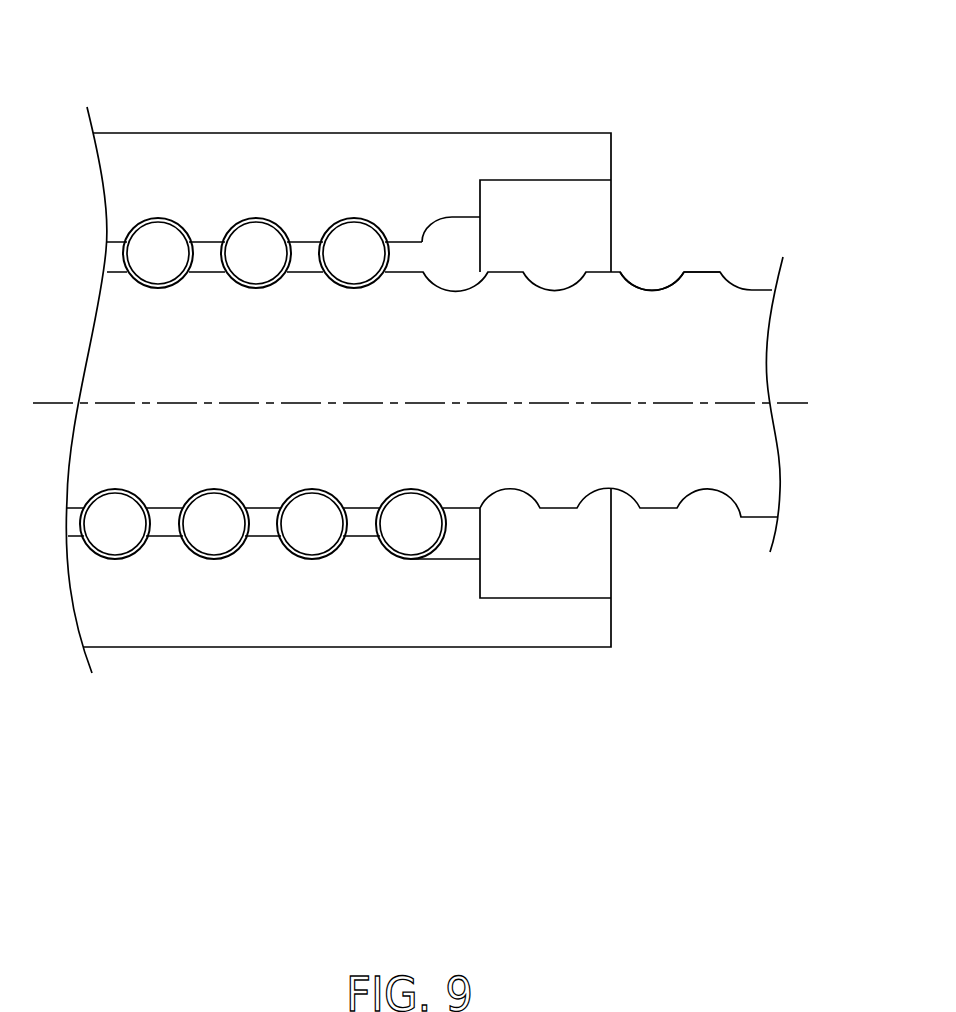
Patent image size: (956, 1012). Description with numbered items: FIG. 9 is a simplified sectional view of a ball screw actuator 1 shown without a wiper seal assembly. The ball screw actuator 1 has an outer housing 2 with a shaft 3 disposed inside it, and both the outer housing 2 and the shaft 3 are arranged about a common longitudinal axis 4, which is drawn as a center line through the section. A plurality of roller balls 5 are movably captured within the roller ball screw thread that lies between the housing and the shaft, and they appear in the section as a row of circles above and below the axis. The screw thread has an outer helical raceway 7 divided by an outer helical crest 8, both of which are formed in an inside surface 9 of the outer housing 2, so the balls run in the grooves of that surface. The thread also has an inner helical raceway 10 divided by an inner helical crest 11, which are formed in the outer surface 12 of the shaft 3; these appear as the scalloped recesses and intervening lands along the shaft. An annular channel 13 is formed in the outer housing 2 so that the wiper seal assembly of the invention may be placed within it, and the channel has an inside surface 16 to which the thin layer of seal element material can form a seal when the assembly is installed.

The ball screw actuator 1 is at (724, 95).
The outer housing 2 is at (347, 160).
The shaft 3 is at (760, 458).
The longitudinal axis 4 is at (799, 403).
The roller balls 5 is at (155, 252).
The outer helical raceway 7 is at (257, 218).
The outer helical crest 8 is at (207, 242).
The inside surface 9 is at (263, 314).
The inner helical raceway 10 is at (647, 287).
The inner helical crest 11 is at (703, 272).
The outer surface 12 is at (586, 345).
The annular channel 13 is at (553, 227).
The inside surface 16 is at (547, 597).